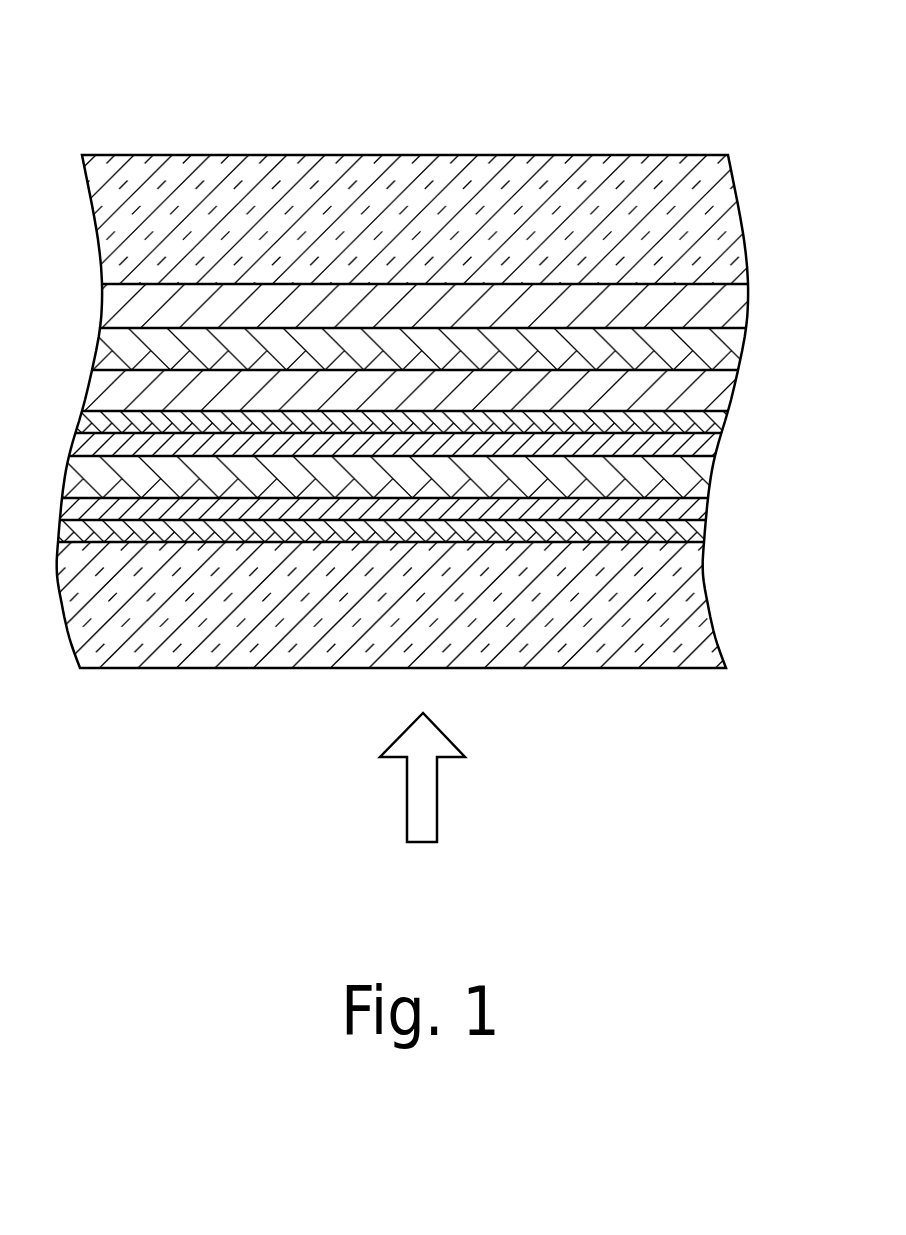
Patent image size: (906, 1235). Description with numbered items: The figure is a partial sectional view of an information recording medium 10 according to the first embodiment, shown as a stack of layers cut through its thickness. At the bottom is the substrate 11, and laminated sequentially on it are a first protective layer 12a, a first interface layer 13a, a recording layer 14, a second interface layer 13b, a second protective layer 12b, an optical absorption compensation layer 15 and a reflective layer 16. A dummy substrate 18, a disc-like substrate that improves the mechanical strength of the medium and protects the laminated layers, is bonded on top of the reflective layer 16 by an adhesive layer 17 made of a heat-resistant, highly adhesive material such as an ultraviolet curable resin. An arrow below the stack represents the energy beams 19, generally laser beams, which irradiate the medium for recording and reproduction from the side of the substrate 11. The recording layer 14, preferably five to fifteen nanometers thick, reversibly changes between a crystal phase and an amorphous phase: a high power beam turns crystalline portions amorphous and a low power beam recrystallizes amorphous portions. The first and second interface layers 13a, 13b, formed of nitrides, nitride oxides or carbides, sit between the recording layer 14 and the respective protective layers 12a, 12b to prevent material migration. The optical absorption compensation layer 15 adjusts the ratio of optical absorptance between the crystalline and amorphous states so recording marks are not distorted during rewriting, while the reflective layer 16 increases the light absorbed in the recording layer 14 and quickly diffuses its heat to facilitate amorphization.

The information recording medium 10 is at (98, 117).
The substrate 11 is at (712, 605).
The first protective layer 12a is at (705, 532).
The second protective layer 12b is at (727, 423).
The first interface layer 13a is at (706, 512).
The second interface layer 13b is at (717, 449).
The recording layer 14 is at (712, 477).
The optical absorption compensation layer 15 is at (737, 392).
The reflective layer 16 is at (744, 350).
The adhesive layer 17 is at (750, 308).
The dummy substrate 18 is at (744, 216).
The energy beams 19 is at (437, 798).